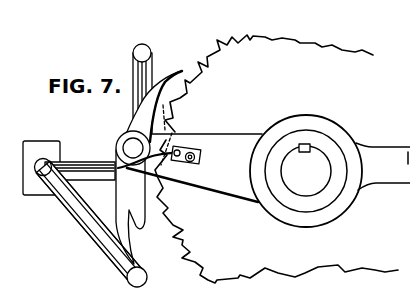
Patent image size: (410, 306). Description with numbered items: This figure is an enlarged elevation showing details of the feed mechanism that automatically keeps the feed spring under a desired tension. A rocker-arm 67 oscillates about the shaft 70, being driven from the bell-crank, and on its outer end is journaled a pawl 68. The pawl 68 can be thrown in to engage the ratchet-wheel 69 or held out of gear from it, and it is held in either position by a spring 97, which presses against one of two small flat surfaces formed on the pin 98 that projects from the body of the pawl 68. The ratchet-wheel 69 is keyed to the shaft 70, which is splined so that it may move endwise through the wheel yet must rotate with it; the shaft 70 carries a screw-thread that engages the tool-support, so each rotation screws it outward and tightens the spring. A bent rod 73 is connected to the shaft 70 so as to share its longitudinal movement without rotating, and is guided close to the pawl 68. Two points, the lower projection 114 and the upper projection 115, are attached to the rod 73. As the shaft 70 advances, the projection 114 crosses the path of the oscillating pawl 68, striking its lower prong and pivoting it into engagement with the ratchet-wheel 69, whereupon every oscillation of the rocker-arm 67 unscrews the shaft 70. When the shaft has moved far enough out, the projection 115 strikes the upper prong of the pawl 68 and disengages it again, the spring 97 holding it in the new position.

The rocker-arm 67 is at (328, 128).
The pawl 68 is at (168, 74).
The ratchet-wheel 69 is at (276, 159).
The shaft 70 is at (306, 170).
The rod 73 is at (135, 95).
The spring 97 is at (177, 136).
The pin 98 is at (132, 150).
The projection 114 is at (147, 277).
The projection 115 is at (142, 49).